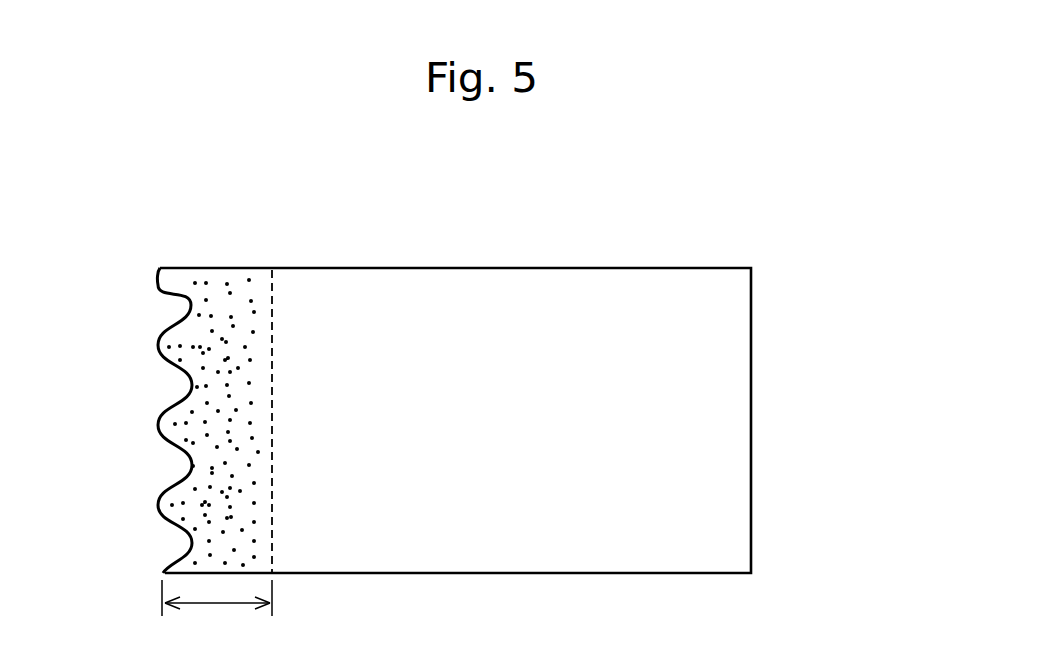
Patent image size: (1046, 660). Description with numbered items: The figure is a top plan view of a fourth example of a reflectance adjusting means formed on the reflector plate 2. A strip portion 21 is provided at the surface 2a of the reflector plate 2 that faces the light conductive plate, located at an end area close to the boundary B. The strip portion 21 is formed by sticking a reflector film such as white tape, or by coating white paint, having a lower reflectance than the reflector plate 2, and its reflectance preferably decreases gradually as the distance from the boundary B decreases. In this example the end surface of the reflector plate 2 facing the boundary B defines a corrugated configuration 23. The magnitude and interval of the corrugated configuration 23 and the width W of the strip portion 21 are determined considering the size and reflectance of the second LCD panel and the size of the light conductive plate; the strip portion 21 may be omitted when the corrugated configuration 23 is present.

The reflector plate 2 is at (513, 253).
The surface of the reflector plate 2a is at (648, 336).
The strip portion 21 is at (240, 300).
The corrugated configuration 23 is at (172, 300).
The boundary B is at (166, 262).
The width of the strip portion W is at (217, 612).